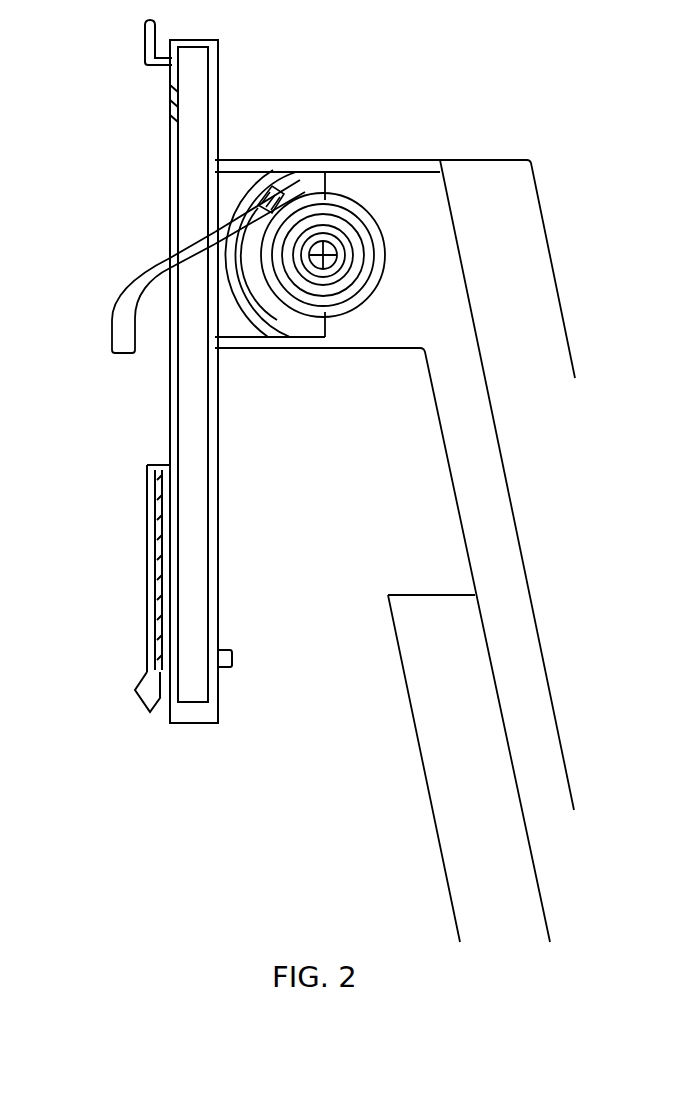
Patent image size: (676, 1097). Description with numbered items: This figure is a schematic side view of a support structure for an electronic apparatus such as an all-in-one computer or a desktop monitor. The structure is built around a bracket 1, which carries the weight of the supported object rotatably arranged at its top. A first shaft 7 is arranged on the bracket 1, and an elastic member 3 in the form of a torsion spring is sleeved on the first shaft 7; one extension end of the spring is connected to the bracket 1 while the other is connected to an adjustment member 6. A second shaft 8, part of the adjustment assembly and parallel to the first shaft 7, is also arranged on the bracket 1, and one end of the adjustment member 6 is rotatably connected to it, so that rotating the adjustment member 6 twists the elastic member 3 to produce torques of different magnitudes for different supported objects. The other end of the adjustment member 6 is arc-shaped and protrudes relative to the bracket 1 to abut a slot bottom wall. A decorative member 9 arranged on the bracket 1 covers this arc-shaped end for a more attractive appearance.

The bracket 1 is at (488, 157).
The elastic member 3 is at (303, 207).
The adjustment member 6 is at (127, 282).
The first shaft 7 is at (328, 271).
The second shaft 8 is at (270, 182).
The decorative member 9 is at (221, 560).